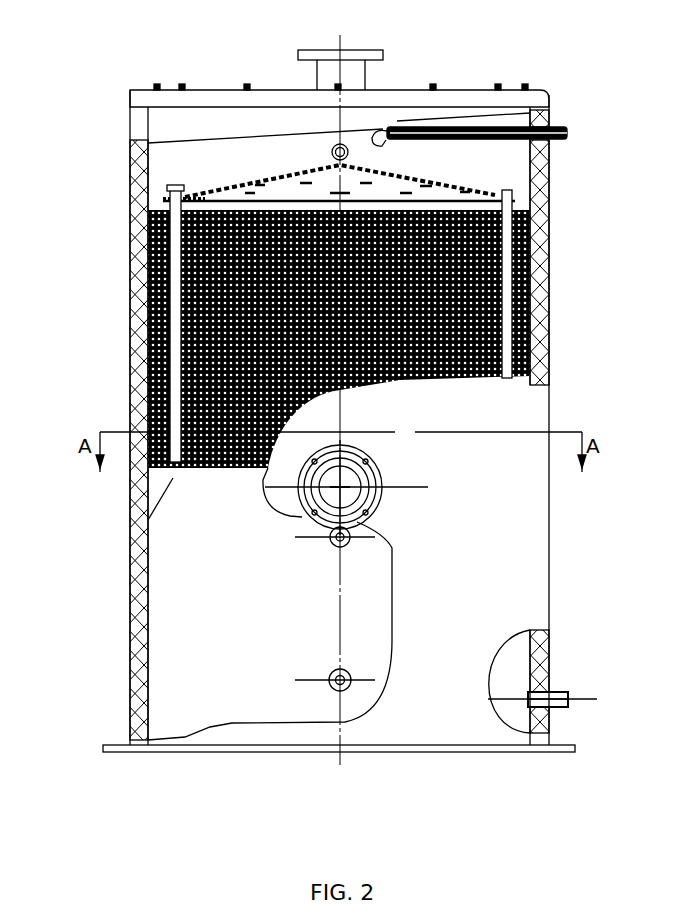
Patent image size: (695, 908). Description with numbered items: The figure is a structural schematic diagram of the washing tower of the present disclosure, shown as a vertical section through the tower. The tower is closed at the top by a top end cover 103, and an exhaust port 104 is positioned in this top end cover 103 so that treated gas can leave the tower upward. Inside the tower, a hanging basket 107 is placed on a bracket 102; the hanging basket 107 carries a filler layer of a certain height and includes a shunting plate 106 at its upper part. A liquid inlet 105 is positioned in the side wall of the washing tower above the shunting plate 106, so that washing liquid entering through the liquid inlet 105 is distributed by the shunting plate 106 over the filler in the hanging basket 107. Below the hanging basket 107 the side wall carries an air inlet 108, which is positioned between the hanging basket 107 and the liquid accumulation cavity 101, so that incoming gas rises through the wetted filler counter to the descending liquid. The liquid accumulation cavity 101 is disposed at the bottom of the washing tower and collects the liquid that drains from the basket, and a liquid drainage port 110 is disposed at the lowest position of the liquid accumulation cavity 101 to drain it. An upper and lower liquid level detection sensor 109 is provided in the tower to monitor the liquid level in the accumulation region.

The liquid accumulation cavity 101 is at (182, 543).
The bracket 102 is at (155, 503).
The top end cover 103 is at (150, 92).
The exhaust port 104 is at (317, 73).
The liquid inlet 105 is at (625, 103).
The shunting plate 106 is at (487, 176).
The hanging basket 107 is at (533, 287).
The air inlet 108 is at (625, 372).
The upper and lower liquid level detection sensor 109 is at (355, 678).
The liquid drainage port 110 is at (568, 707).